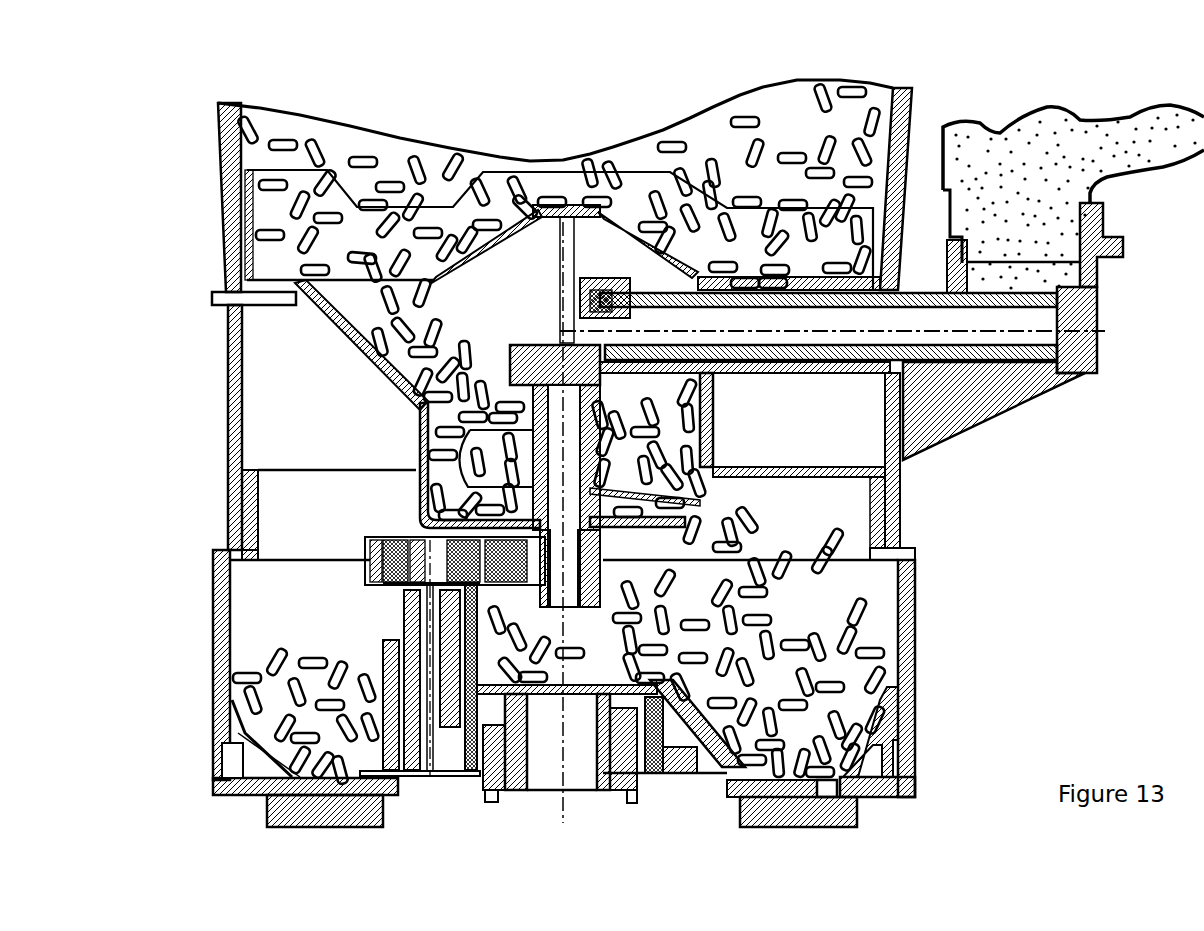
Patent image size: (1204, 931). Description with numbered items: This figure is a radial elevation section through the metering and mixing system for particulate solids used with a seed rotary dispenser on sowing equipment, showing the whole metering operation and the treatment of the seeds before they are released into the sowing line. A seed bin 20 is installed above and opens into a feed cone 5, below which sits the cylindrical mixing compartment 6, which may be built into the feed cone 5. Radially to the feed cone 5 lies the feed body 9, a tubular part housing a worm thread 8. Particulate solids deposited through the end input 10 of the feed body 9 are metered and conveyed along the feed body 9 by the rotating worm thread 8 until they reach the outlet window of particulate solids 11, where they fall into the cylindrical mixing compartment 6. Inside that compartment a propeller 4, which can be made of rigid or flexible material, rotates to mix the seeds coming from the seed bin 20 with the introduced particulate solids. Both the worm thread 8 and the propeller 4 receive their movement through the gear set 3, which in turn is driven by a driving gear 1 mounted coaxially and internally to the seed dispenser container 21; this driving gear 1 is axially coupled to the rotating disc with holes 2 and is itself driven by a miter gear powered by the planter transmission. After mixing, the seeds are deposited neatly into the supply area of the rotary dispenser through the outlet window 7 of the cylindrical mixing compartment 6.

The driving gear 1 is at (657, 778).
The rotating disc with holes 2 is at (838, 803).
The gear set 3 is at (592, 287).
The propeller 4 is at (476, 484).
The feed cone 5 is at (363, 330).
The cylindrical mixing compartment 6 is at (430, 444).
The outlet window 7 is at (700, 497).
The worm thread 8 is at (1027, 353).
The feed body 9 is at (910, 370).
The end input 10 is at (1033, 288).
The outlet window of particulate solids 11 is at (676, 360).
The seed bin 20 is at (228, 196).
The seed dispenser container 21 is at (210, 705).